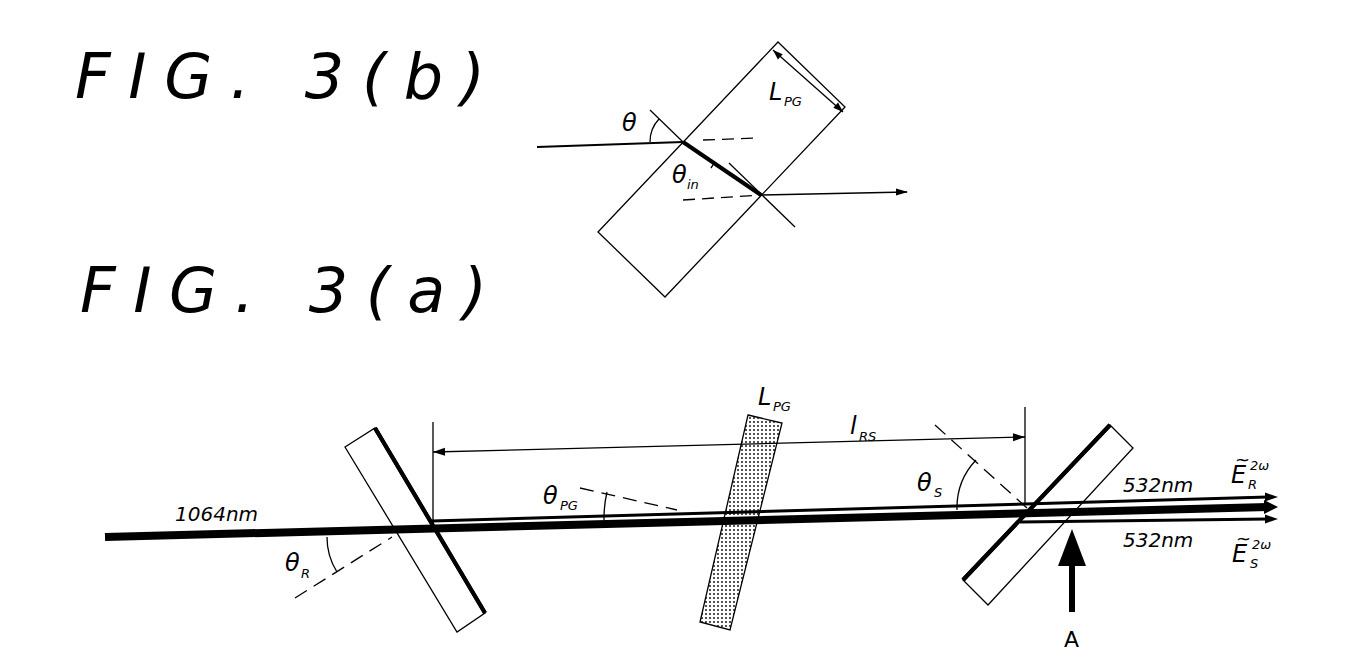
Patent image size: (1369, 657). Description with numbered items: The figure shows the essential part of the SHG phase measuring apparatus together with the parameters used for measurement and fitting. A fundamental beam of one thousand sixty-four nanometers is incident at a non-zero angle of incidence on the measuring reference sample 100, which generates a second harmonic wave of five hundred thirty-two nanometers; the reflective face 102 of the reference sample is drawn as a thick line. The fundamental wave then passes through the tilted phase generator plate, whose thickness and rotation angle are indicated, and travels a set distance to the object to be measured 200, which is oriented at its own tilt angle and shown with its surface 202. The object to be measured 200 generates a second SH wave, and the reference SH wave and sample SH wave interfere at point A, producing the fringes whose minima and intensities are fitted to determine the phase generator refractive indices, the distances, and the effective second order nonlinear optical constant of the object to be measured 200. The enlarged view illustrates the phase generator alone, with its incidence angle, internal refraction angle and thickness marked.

The measuring reference sample 100 is at (397, 446).
The reference surface 102 is at (432, 583).
The object to be measured 200 is at (1085, 437).
The sample surface 202 is at (970, 588).